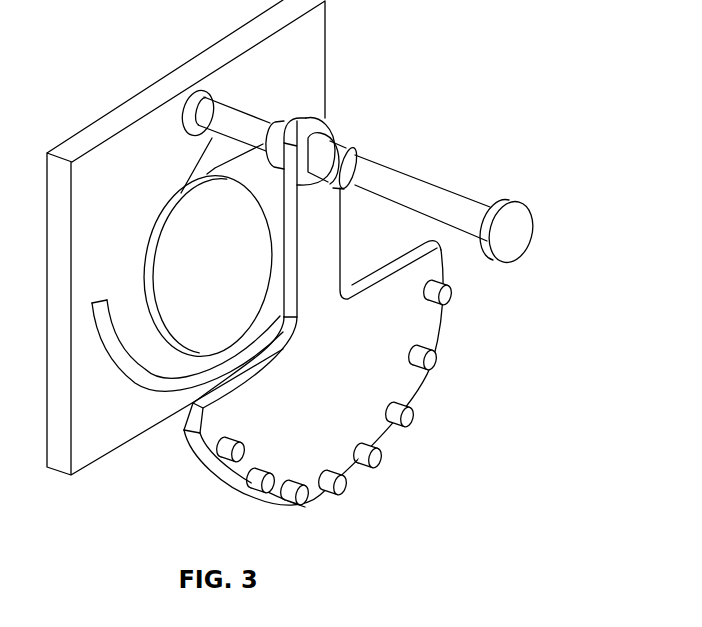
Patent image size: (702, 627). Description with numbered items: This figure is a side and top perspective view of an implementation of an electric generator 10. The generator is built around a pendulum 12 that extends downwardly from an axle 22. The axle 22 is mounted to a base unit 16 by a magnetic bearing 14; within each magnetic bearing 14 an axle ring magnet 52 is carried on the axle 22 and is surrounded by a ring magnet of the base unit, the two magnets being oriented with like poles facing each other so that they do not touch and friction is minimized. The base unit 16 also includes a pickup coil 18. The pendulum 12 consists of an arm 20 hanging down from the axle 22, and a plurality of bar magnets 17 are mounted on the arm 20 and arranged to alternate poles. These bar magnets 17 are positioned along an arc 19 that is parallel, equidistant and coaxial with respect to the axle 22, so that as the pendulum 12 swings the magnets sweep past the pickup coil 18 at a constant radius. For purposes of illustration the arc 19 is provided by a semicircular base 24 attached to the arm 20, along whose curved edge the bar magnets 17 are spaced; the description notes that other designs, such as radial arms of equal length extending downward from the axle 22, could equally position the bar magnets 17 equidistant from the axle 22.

The electric generator 10 is at (379, 119).
The pendulum 12 is at (341, 258).
The magnetic bearing 14 is at (194, 89).
The base unit 16 is at (107, 438).
The bar magnets 17 is at (408, 415).
The pickup coil 18 is at (230, 283).
The arc 19 is at (447, 276).
The arm 20 is at (322, 236).
The axle 22 is at (442, 197).
The semicircular base 24 is at (336, 395).
The axle ring magnet 52 is at (511, 230).